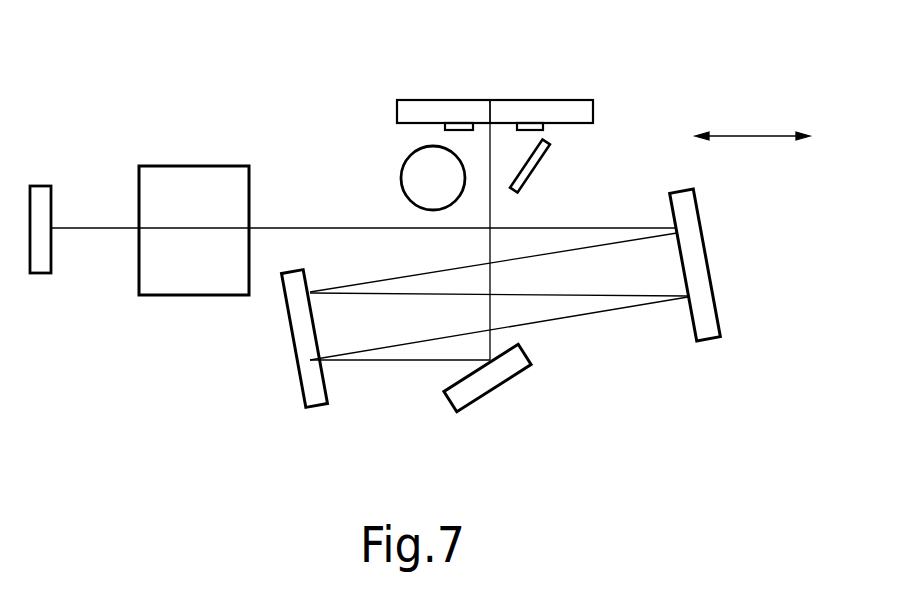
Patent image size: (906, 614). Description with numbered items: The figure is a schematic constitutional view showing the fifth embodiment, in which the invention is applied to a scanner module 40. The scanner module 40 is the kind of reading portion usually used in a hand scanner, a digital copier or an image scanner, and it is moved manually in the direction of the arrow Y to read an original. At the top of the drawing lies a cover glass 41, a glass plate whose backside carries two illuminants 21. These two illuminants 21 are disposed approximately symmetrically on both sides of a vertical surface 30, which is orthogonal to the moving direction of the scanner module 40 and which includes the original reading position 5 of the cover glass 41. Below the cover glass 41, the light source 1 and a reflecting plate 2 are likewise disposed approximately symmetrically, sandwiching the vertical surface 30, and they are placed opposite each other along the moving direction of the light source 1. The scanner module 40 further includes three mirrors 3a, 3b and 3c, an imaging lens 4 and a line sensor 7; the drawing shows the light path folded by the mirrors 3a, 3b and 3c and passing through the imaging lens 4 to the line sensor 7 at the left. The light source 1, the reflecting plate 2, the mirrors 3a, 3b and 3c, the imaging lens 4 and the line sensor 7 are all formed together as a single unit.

The scanner module 40 is at (708, 50).
The line sensor 7 is at (38, 185).
The imaging lens 4 is at (173, 166).
The vertical surface 30 is at (492, 218).
The original reading position 5 is at (490, 100).
The cover glass 41 is at (575, 108).
The illuminant 21 is at (445, 127).
The light source 1 is at (405, 155).
The reflecting plate 2 is at (547, 155).
The mirror 3a is at (473, 400).
The mirror 3b is at (298, 384).
The mirror 3c is at (718, 322).